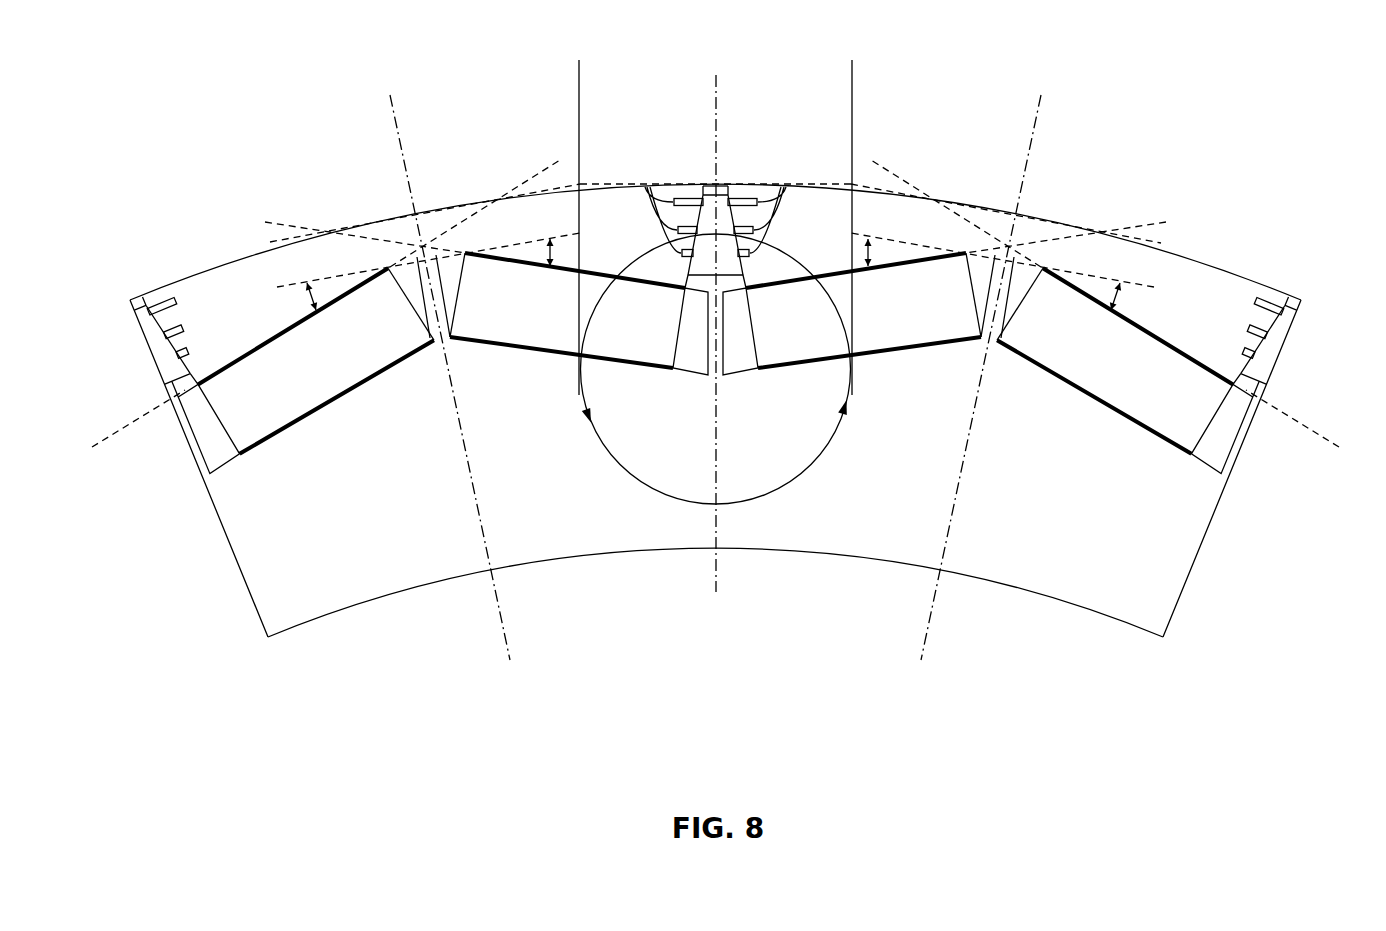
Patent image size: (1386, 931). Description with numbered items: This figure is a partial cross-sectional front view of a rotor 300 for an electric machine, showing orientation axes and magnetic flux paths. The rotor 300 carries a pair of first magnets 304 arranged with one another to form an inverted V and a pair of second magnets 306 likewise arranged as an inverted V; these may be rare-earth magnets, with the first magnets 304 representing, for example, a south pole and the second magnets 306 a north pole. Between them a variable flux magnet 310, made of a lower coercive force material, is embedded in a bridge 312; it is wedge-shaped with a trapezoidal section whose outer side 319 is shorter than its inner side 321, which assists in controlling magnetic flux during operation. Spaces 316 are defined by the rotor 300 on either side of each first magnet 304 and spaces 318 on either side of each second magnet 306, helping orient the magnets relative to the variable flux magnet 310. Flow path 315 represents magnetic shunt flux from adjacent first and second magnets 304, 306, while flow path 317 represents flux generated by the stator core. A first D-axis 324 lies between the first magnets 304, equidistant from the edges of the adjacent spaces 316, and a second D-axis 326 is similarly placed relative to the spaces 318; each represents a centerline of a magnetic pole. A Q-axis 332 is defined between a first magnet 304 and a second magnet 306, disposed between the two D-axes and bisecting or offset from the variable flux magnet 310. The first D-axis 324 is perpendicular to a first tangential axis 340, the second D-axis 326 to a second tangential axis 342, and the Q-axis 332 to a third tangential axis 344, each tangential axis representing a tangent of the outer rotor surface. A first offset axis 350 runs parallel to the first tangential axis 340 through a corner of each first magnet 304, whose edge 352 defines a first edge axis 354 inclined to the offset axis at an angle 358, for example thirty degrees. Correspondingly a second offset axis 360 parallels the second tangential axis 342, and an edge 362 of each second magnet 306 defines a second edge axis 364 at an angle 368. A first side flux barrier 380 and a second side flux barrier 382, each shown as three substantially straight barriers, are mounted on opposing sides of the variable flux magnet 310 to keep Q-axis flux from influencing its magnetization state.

The rotor 300 is at (1025, 210).
The pair of first magnets 304 is at (312, 417).
The pair of second magnets 306 is at (1119, 417).
The variable flux magnet 310 is at (708, 187).
The bridge 312 is at (744, 192).
The flow path 315 is at (733, 508).
The spaces 316 is at (407, 280).
The flow path 317 is at (578, 92).
The spaces 318 is at (983, 267).
The outer side 319 is at (724, 187).
The inner side 321 is at (692, 285).
The first D-axis 324 is at (398, 100).
The second D-axis 326 is at (1045, 105).
The Q-axis 332 is at (718, 96).
The first tangential axis 340 is at (272, 242).
The second tangential axis 342 is at (1158, 243).
The third tangential axis 344 is at (580, 182).
The first offset axis 350 is at (548, 237).
The edge 352 is at (594, 263).
The first edge axis 354 is at (107, 440).
The angle 358 is at (586, 255).
The second offset axis 360 is at (862, 230).
The edge 362 is at (793, 270).
The second edge axis 364 is at (1155, 225).
The angle 368 is at (866, 250).
The first side flux barrier 380 is at (643, 189).
The second side flux barrier 382 is at (787, 189).